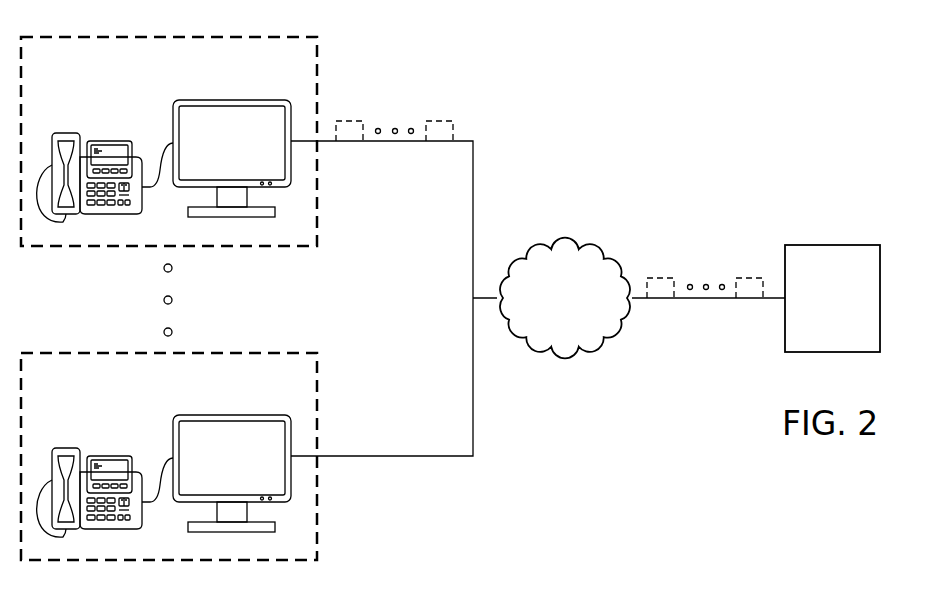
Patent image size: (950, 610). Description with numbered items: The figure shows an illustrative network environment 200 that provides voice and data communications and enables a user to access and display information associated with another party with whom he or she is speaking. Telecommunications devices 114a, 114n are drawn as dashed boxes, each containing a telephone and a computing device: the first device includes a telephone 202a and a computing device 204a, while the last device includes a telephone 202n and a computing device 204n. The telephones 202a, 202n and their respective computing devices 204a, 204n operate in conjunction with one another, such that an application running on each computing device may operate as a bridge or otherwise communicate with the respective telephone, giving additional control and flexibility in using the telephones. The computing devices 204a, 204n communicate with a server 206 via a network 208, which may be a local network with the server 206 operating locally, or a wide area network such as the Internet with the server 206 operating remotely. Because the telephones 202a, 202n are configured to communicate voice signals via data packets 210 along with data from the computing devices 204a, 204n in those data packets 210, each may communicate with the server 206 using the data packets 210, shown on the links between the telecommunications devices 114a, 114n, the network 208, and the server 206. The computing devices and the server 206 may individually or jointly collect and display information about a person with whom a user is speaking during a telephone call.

The network environment 200 is at (748, 150).
The telecommunications device 114a is at (318, 190).
The telecommunications device 114n is at (318, 503).
The telephone 202a is at (110, 141).
The telephone 202n is at (110, 456).
The computing device 204a is at (231, 100).
The computing device 204n is at (231, 415).
The server 206 is at (832, 245).
The network 208 is at (585, 247).
The data packets 210 is at (432, 121).